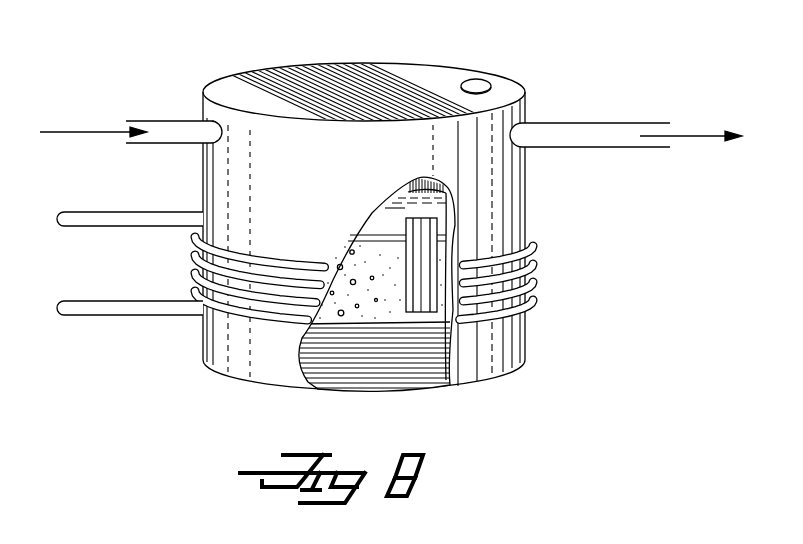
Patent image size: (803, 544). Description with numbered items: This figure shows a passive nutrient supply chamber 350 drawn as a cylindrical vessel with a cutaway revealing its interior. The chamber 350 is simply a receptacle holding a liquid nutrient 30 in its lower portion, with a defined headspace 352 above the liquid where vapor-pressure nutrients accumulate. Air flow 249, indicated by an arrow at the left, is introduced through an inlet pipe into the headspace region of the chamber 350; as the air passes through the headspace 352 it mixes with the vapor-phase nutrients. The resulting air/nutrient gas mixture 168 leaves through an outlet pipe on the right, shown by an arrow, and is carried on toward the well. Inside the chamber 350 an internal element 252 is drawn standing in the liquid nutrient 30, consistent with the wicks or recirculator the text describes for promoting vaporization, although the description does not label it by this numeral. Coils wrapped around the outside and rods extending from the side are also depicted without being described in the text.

The chamber 350 is at (352, 63).
The headspace 352 is at (418, 178).
The electrode tube 252 is at (407, 250).
The air flow 249 is at (75, 132).
The air/nutrient gas mixture 168 is at (704, 134).
The liquid nutrient 30 is at (347, 334).